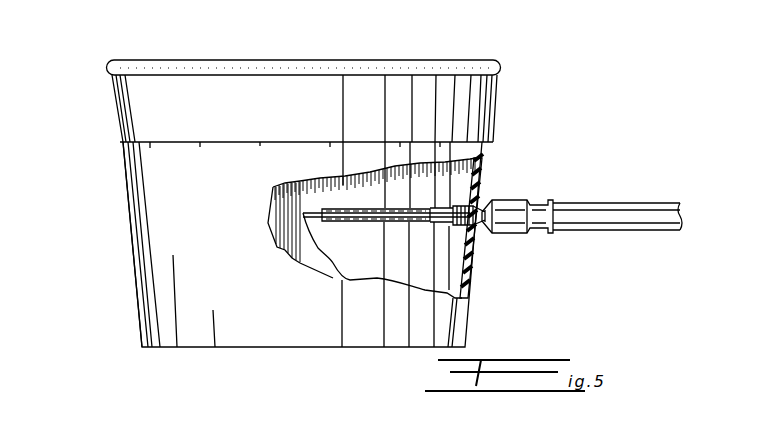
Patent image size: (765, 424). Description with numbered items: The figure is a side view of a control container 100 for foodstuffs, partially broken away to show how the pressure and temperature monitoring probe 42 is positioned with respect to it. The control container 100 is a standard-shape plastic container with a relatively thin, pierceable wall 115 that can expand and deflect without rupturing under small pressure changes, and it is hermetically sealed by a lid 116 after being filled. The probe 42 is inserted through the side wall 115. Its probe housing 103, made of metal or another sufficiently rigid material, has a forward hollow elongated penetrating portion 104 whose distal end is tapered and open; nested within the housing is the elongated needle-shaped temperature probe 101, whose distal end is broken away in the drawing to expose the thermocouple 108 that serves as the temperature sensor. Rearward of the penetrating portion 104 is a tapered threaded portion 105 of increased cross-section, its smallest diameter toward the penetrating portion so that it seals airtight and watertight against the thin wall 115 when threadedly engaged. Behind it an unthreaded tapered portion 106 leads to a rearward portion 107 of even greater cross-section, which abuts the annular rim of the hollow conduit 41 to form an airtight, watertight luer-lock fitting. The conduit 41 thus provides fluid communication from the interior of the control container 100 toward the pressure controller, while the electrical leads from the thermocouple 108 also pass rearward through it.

The control container 100 is at (392, 53).
The lid 116 is at (285, 61).
The wall 115 is at (132, 233).
The penetrating portion 104 is at (315, 183).
The thermocouple 108 is at (312, 270).
The probe housing 103 is at (397, 227).
The temperature probe 101 is at (376, 222).
The threaded portion 105 is at (470, 267).
The unthreaded tapered portion 106 is at (478, 226).
The rearward portion 107 is at (516, 236).
The monitoring probe 42 is at (582, 206).
The conduit 41 is at (609, 203).